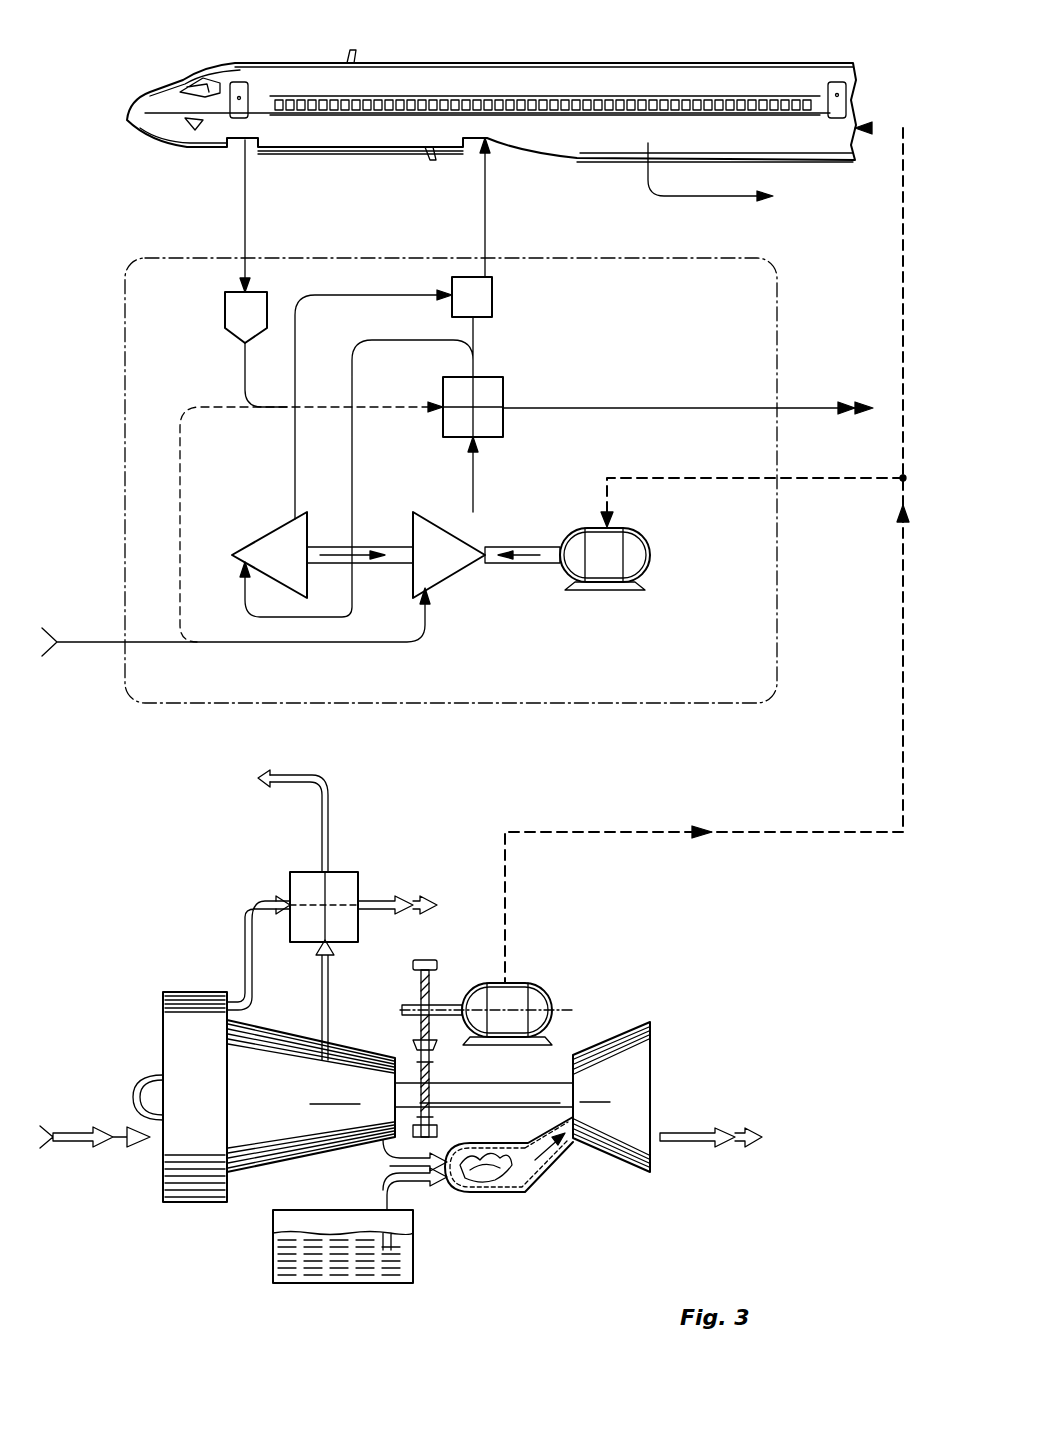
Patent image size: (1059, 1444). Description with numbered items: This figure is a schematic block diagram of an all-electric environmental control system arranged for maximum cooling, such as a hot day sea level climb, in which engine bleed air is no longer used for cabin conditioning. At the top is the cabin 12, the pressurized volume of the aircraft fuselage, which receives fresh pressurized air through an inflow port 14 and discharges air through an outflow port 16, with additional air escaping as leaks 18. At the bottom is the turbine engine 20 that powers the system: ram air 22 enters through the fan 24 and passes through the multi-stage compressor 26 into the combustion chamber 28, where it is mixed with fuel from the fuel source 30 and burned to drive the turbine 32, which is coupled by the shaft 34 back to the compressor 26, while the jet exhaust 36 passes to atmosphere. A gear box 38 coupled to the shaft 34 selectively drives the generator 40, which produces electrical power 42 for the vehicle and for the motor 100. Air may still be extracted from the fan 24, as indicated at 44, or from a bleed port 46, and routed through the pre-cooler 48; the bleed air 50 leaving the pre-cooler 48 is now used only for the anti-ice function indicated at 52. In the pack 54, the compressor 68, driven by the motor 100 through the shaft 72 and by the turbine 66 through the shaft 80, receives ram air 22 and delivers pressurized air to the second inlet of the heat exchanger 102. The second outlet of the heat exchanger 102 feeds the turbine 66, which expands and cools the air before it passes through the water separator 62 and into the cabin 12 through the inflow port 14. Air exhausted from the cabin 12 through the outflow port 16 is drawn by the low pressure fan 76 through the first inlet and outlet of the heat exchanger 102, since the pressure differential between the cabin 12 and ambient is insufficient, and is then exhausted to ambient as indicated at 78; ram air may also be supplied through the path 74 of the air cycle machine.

The cabin 12 is at (373, 65).
The inflow port 14 is at (503, 160).
The outflow port 16 is at (235, 165).
The leaks 18 is at (695, 213).
The turbine engine 20 is at (112, 968).
The ram air 22 is at (110, 640).
The fan 24 is at (182, 1205).
The multi-stage compressor 26 is at (245, 1175).
The combustion chamber 28 is at (545, 1175).
The fuel source 30 is at (413, 1255).
The turbine 32 is at (605, 1037).
The shaft 34 is at (490, 1083).
The jet exhaust 36 is at (678, 1130).
The gear box 38 is at (455, 970).
The generator 40 is at (518, 983).
The electrical power 42 is at (820, 830).
The fan air extraction 44 is at (238, 940).
The bleed port 46 is at (307, 1050).
The pre-cooler 48 is at (345, 868).
The bleed air output 50 is at (378, 898).
The anti-ice air 52 is at (290, 815).
The pack 54 is at (658, 703).
The water separator 62 is at (494, 297).
The turbine 66 is at (283, 530).
The compressor 68 is at (445, 525).
The shaft 72 is at (530, 568).
The path 74 is at (178, 533).
The low pressure fan 76 is at (235, 292).
The exhaust to ambient 78 is at (818, 410).
The shaft 80 is at (377, 547).
The motor 100 is at (650, 556).
The heat exchanger 102 is at (505, 386).